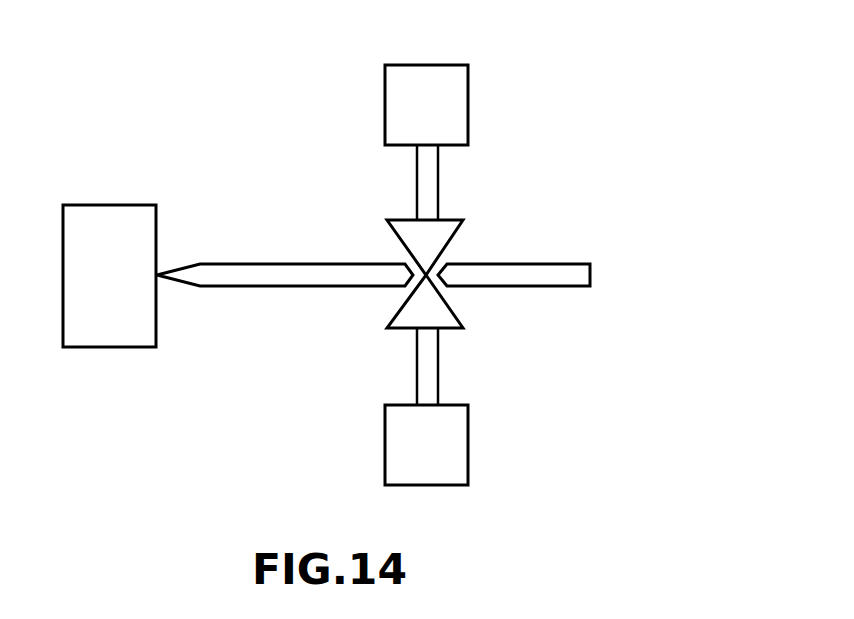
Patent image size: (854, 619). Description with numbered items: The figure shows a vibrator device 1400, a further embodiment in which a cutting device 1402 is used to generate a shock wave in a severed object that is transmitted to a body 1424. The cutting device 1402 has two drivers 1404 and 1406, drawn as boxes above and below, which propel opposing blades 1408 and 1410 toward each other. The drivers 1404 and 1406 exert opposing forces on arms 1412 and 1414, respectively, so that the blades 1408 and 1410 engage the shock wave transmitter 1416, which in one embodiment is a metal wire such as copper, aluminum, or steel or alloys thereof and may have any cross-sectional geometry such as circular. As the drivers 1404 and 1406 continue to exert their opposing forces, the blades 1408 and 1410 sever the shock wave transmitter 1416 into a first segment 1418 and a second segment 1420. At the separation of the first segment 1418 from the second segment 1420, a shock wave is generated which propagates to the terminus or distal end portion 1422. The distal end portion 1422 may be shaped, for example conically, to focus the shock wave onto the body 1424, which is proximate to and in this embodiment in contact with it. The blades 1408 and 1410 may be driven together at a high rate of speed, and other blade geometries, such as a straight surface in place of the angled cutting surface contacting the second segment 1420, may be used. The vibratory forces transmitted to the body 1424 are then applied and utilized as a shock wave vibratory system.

The vibrator device 1400 is at (584, 60).
The cutting device 1402 is at (472, 190).
The driver 1404 is at (386, 98).
The driver 1406 is at (468, 420).
The blade 1408 is at (395, 232).
The blade 1410 is at (455, 315).
The arm 1412 is at (417, 190).
The arm 1414 is at (438, 360).
The shock wave transmitter 1416 is at (342, 302).
The first segment 1418 is at (232, 287).
The second segment 1420 is at (563, 265).
The distal end portion 1422 is at (185, 255).
The body 1424 is at (90, 205).